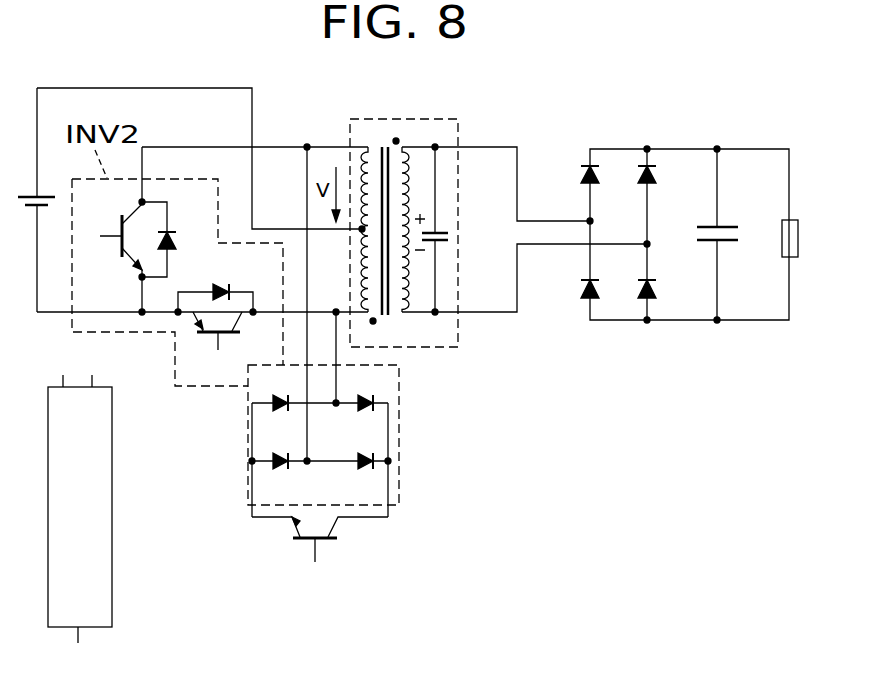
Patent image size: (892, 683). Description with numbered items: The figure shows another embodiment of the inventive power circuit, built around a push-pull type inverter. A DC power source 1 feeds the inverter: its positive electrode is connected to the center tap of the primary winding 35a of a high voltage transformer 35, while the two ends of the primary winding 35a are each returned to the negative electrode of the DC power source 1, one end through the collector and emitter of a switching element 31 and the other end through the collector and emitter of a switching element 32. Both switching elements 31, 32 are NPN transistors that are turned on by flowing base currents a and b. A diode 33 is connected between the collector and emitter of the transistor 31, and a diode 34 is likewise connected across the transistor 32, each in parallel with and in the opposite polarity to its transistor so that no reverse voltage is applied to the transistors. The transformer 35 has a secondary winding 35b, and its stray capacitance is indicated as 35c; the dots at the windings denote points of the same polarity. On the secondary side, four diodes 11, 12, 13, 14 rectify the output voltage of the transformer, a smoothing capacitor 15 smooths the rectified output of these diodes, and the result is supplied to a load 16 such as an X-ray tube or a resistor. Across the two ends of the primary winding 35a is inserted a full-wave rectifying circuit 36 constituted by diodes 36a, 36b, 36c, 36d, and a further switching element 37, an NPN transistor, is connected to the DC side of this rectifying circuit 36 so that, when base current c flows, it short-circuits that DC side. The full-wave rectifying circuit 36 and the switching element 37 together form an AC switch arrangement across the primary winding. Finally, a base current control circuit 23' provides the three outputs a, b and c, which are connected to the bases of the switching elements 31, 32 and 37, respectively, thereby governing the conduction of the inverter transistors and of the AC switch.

The DC power source 1 is at (43, 192).
The diode 11 is at (577, 172).
The diode 12 is at (577, 292).
The diode 13 is at (659, 175).
The diode 14 is at (658, 292).
The smoothing capacitor 15 is at (697, 237).
The load 16 is at (782, 240).
The base current control circuit 23' is at (120, 509).
The switching element 31 is at (118, 226).
The switching element 32 is at (200, 346).
The diode 33 is at (182, 242).
The diode 34 is at (220, 284).
The transformer 35 is at (472, 207).
The primary winding 35a is at (361, 158).
The secondary winding 35b is at (415, 158).
The stray capacitance 35c is at (448, 237).
The full-wave rectifying circuit 36 is at (333, 441).
The diode 36a is at (268, 406).
The diode 36b is at (384, 407).
The diode 36c is at (267, 465).
The diode 36d is at (384, 467).
The switching element 37 is at (328, 545).